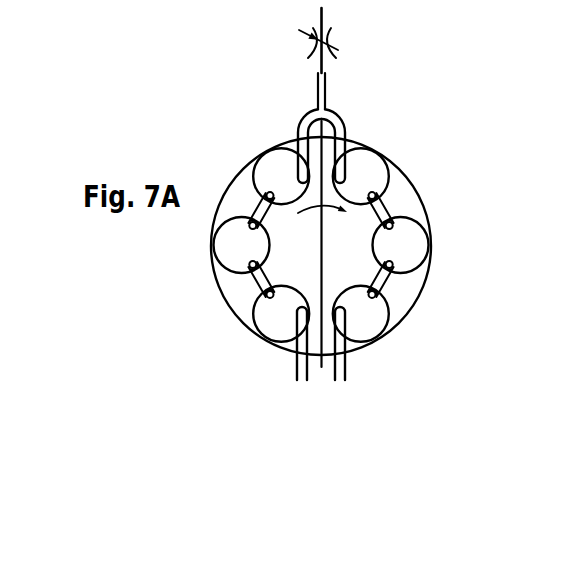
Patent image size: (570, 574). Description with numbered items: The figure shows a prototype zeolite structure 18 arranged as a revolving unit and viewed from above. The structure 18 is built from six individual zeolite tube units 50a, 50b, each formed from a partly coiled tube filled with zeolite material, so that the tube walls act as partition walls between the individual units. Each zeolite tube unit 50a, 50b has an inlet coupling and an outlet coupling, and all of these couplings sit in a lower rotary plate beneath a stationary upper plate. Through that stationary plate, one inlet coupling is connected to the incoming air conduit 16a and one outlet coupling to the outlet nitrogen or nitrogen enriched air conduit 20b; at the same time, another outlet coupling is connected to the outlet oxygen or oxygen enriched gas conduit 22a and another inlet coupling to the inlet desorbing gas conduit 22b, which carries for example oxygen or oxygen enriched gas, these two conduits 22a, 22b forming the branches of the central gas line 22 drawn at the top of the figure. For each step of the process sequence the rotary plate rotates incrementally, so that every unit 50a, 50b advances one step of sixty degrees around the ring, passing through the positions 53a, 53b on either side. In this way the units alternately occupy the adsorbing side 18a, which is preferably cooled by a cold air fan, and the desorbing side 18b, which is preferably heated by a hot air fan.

The zeolite structure 18 is at (464, 159).
The adsorbing side 18a is at (421, 213).
The desorbing side 18b is at (236, 190).
The supply tube 22 is at (318, 83).
The outlet oxygen or oxygen enriched gas conduit 22a is at (345, 125).
The inlet desorbing gas conduit 22b is at (298, 125).
The first chamber 53a is at (418, 243).
The second chamber 53b is at (222, 245).
The zeolite tube unit 50a is at (383, 289).
The zeolite tube unit 50b is at (258, 289).
The outlet nitrogen or nitrogen enriched air conduit 20b is at (297, 366).
The incoming air conduit 16a is at (345, 366).